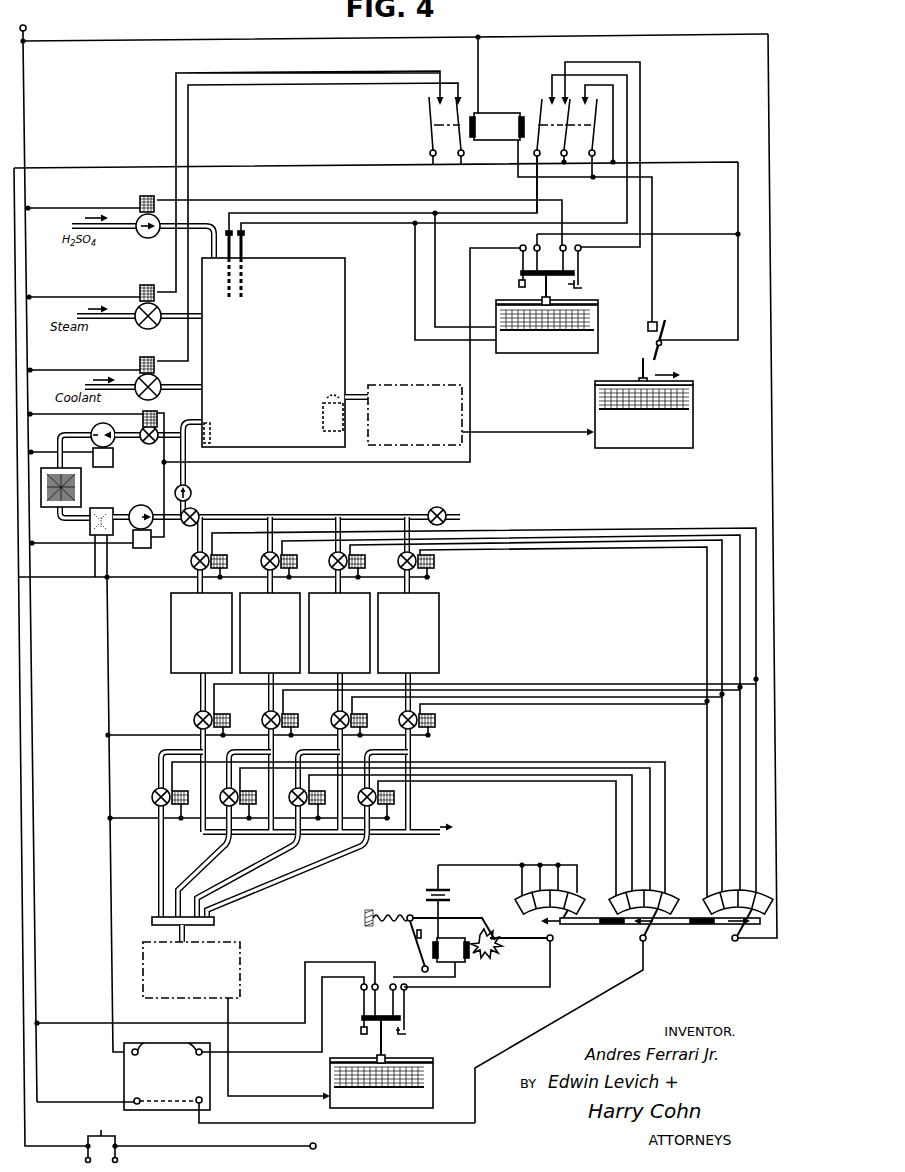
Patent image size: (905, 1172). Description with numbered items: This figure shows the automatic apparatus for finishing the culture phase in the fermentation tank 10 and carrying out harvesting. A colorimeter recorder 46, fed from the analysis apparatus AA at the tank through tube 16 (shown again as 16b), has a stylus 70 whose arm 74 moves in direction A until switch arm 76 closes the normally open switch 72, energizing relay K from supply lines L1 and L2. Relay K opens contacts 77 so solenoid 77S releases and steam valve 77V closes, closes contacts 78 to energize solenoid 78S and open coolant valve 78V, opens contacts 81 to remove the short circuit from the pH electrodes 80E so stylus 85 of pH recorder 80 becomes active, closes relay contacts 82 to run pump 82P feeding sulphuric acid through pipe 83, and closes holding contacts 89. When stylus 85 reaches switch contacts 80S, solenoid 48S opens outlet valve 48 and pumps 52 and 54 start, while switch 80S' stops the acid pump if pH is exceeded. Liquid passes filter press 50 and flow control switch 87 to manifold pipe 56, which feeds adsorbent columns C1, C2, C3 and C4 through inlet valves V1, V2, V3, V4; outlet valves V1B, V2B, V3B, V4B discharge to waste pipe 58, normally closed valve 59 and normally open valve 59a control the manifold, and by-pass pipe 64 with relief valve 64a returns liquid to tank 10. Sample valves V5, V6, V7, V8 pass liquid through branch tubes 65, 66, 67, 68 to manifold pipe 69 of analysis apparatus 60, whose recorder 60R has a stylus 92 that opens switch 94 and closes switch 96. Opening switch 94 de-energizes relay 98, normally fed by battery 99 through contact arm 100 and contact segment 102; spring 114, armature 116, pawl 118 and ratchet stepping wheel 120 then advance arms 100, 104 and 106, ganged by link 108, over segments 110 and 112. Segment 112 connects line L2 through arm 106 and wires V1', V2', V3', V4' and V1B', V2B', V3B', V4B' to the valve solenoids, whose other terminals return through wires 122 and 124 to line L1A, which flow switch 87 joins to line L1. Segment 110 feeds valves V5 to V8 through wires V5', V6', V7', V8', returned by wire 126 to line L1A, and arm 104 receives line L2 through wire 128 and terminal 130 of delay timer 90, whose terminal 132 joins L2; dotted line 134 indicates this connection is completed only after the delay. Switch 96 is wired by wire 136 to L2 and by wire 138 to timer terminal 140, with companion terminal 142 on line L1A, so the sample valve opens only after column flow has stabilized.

The supply line L2 is at (394, 553).
The supply line L1 is at (316, 1146).
The line L1A is at (108, 664).
The fermentation tank 10 is at (348, 293).
The tube 16 is at (360, 393).
The electrode in analysis line 16b is at (188, 934).
The colorimeter recorder 46 is at (698, 410).
The outlet valve 48 is at (146, 442).
The solenoid 48S is at (158, 414).
The filter press 50 is at (82, 488).
The pump 52 is at (91, 430).
The pump 54 is at (146, 508).
The manifold pipe 56 is at (374, 513).
The waste discharge pipe 58 is at (388, 840).
The valve 59 is at (434, 508).
The valve 59a is at (190, 527).
The analysis apparatus 60 is at (244, 946).
The recorder 60R is at (442, 1072).
The by-pass pipe 64 is at (188, 471).
The pressure relief valve 64a is at (192, 493).
The branch tube 65 is at (158, 861).
The pipe 66 is at (206, 868).
The pipe 67 is at (256, 866).
The pipe 68 is at (286, 872).
The manifold pipe 69 is at (152, 918).
The stylus 70 is at (638, 380).
The switch 72 is at (672, 332).
The arm 74 is at (640, 362).
The switch arm 76 is at (662, 350).
The contacts 77 is at (460, 94).
The solenoid 77S is at (140, 292).
The solenoid valve 77V is at (138, 327).
The contacts 78 is at (428, 99).
The solenoid 78S is at (157, 358).
The valve 78V is at (160, 385).
The pH recorder 80 is at (602, 318).
The pH electrodes 80E is at (246, 240).
The switch contacts 80S is at (372, 353).
The switch 80S' is at (597, 272).
The contacts 81 is at (543, 96).
The relay contacts 82 is at (571, 95).
The pump 82P is at (140, 198).
The pipe 83 is at (212, 228).
The stylus 85 is at (540, 290).
The flow control switch 87 is at (89, 532).
The holding contacts 89 is at (598, 95).
The delay timer 90 is at (120, 1073).
The stylus 92 is at (386, 1048).
The switch 94 is at (414, 1018).
The switch 96 is at (356, 1022).
The relay 98 is at (470, 960).
The battery 99 is at (434, 890).
The contact arm 100 is at (556, 940).
The stationary contact segment 102 is at (520, 896).
The contact arm 104 is at (646, 941).
The contact arm 106 is at (732, 939).
The link 108 is at (624, 926).
The contact segment 110 is at (610, 892).
The contact segment 112 is at (704, 892).
The spring 114 is at (392, 912).
The relay armature 116 is at (418, 940).
The pawl 118 is at (468, 915).
The ratchet stepping wheel 120 is at (500, 950).
The wire 122 is at (108, 580).
The wire 124 is at (128, 734).
The wire 126 is at (128, 817).
The wire 128 is at (536, 1032).
The terminal 130 is at (204, 1102).
The terminal 132 is at (134, 1104).
The dotted line 134 is at (163, 1118).
The wire 136 is at (262, 1023).
The wire 138 is at (274, 1051).
The terminal 140 is at (192, 1040).
The companion terminal 142 is at (140, 1040).
The arrow A is at (667, 368).
The analysis apparatus AA is at (410, 383).
The relay K is at (491, 110).
The adsorbent column C1 is at (201, 633).
The adsorbent column C2 is at (270, 633).
The adsorbent column C3 is at (339, 633).
The adsorbent column C4 is at (408, 633).
The inlet valve V1 is at (462, 710).
The inlet valve V2 is at (488, 713).
The inlet valve V3 is at (513, 716).
The inlet valve V4 is at (540, 722).
The wire V1' is at (728, 517).
The wire V2' is at (692, 520).
The wire V3' is at (700, 565).
The wire V4' is at (691, 593).
The outlet valve V1B is at (458, 705).
The outlet valve V2B is at (486, 709).
The outlet valve V3B is at (512, 713).
The outlet valve V4B is at (540, 716).
The wire V1B' is at (667, 667).
The wire V2B' is at (617, 671).
The wire V3B' is at (600, 708).
The wire V4B' is at (538, 711).
The valve V5 is at (400, 827).
The valve V6 is at (427, 829).
The valve V7 is at (452, 832).
The valve V8 is at (478, 838).
The wire V5' is at (634, 748).
The wire V6' is at (583, 751).
The wire V7' is at (610, 793).
The wire V8' is at (599, 817).